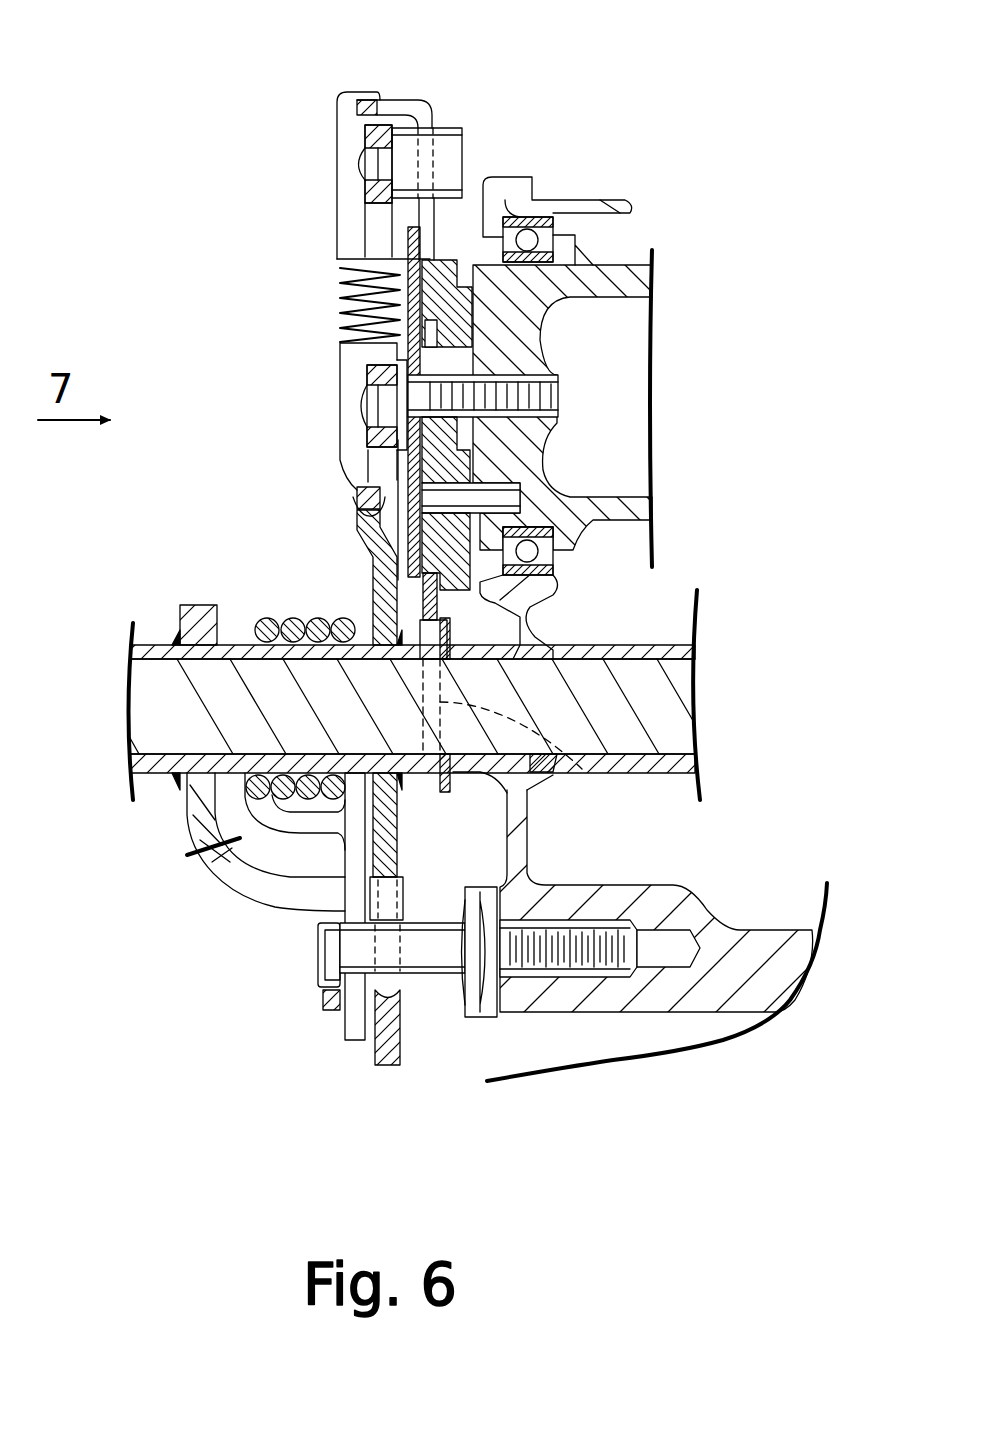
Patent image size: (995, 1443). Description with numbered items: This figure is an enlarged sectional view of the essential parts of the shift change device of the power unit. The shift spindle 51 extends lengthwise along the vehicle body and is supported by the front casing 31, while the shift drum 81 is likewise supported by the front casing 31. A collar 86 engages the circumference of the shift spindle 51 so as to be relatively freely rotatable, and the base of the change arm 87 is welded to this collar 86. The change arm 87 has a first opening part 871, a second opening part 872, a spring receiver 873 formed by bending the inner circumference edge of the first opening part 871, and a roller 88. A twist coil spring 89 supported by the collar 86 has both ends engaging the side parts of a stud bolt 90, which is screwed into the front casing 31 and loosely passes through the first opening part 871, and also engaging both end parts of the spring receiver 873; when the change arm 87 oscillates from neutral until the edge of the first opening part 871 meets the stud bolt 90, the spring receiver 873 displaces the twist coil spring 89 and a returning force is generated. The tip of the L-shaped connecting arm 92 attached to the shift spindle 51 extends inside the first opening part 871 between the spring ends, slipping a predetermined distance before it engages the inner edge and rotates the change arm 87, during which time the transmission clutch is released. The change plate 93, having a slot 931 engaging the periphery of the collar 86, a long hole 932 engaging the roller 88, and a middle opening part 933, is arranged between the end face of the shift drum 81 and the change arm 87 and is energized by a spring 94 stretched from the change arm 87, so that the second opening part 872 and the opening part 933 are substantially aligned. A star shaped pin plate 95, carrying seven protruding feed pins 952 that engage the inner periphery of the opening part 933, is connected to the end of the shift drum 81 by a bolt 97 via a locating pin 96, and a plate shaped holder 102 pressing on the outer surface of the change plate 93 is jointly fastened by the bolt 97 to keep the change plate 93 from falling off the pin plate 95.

The front casing 31 is at (647, 993).
The shift spindle 51 is at (647, 657).
The shift drum 81 is at (617, 260).
The collar 86 is at (233, 615).
The change arm 87 is at (408, 808).
The first opening part 871 is at (380, 857).
The second opening part 872 is at (357, 487).
The spring receiver 873 is at (320, 1007).
The roller 88 is at (450, 130).
The twist coil spring 89 is at (292, 622).
The stud bolt 90 is at (427, 963).
The connecting arm 92 is at (253, 887).
The change plate 93 is at (440, 98).
The slot 931 is at (533, 722).
The long hole 932 is at (430, 227).
The opening part 933 is at (518, 596).
The spring 94 is at (335, 248).
The pin plate 95 is at (488, 340).
The feed pins 952 is at (400, 307).
The locating pin 96 is at (510, 497).
The bolt 97 is at (375, 403).
The holder 102 is at (430, 228).